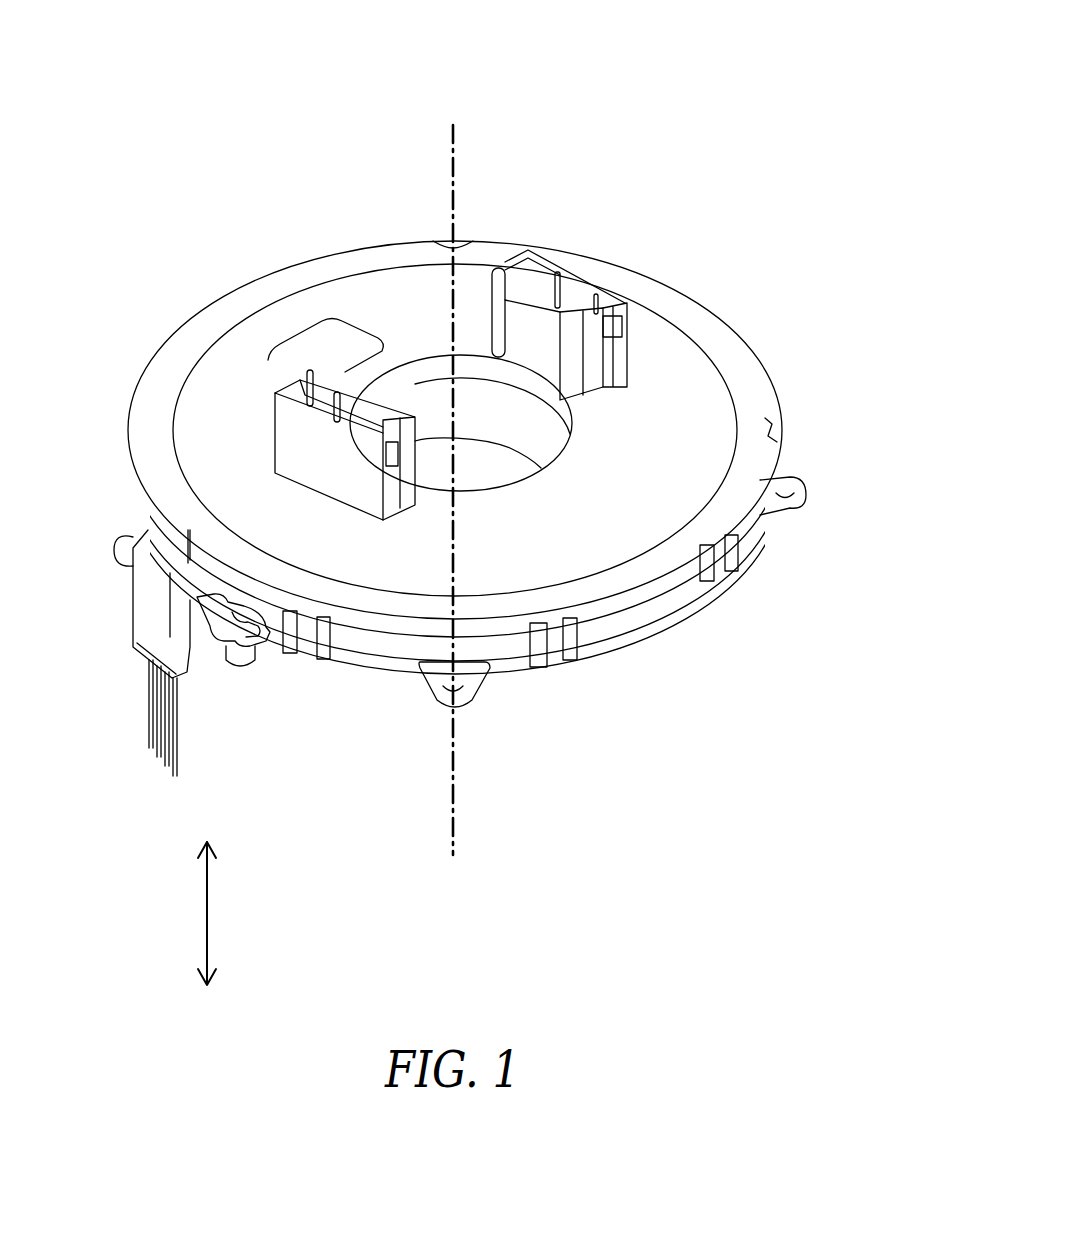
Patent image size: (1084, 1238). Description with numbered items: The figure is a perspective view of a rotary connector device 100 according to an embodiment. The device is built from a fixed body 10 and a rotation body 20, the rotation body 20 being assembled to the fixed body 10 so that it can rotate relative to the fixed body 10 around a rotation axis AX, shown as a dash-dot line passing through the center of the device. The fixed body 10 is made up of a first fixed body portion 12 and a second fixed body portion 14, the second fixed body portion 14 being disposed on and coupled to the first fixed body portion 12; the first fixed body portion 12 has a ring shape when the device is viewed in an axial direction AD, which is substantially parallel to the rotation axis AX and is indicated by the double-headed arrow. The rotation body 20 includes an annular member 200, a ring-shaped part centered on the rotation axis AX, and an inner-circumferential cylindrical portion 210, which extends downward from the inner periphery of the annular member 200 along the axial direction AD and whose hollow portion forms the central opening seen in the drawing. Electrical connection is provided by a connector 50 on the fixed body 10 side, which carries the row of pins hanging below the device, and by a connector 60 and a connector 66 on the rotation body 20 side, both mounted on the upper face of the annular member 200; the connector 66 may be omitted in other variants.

The rotary connector device 100 is at (667, 87).
The fixed body 10 is at (735, 742).
The first fixed body portion 12 is at (595, 632).
The second fixed body portion 14 is at (627, 603).
The rotation body 20 is at (215, 222).
The annular member 200 is at (240, 336).
The inner-circumferential cylindrical portion 210 is at (421, 396).
The connector 50 is at (147, 592).
The connector 60 is at (573, 290).
The connector 66 is at (292, 442).
The rotation axis AX is at (452, 182).
The axial direction AD is at (209, 905).